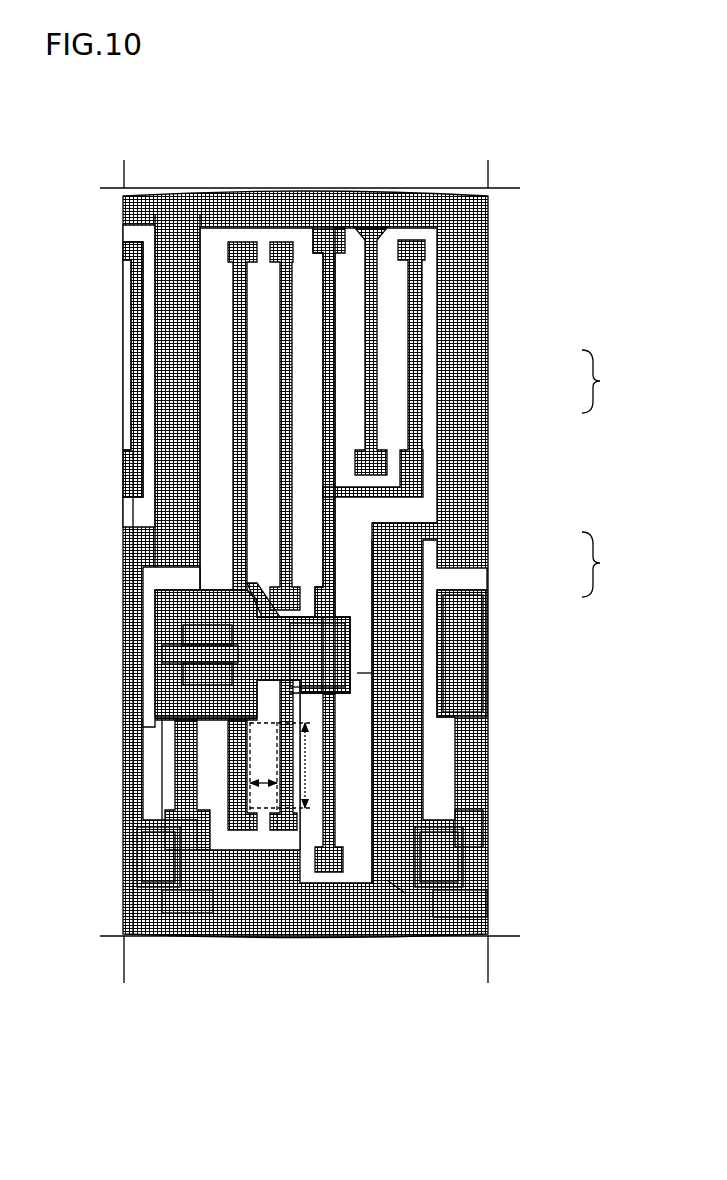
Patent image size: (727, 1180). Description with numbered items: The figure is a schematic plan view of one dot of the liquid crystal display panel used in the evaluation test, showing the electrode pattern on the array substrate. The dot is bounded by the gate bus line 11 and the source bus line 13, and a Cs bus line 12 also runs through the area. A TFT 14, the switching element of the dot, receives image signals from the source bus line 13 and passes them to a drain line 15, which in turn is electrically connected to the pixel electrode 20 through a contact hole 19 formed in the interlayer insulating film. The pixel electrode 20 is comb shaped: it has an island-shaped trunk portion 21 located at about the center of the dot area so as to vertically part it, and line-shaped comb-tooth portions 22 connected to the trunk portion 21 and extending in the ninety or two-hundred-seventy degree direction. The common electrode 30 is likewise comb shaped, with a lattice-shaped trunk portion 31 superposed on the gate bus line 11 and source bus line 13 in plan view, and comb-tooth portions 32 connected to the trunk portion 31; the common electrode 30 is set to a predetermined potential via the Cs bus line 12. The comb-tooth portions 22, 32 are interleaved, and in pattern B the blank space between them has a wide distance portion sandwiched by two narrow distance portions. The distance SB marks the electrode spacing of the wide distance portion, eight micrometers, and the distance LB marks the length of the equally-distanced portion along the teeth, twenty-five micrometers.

The gate bus line 11 is at (348, 924).
The Cs bus line 12 is at (430, 655).
The source bus line 13 is at (173, 510).
The TFT 14 is at (186, 940).
The drain line 15 is at (167, 802).
The contact hole 19 is at (183, 655).
The pixel electrode 20 is at (608, 564).
The trunk portion 21 is at (330, 640).
The comb-tooth portion 22 is at (335, 540).
The common electrode 30 is at (608, 381).
The trunk portion 31 is at (462, 398).
The comb-tooth portion 32 is at (372, 372).
The pattern B is at (255, 764).
The distance S_B SB is at (263, 790).
The distance L_B LB is at (305, 760).